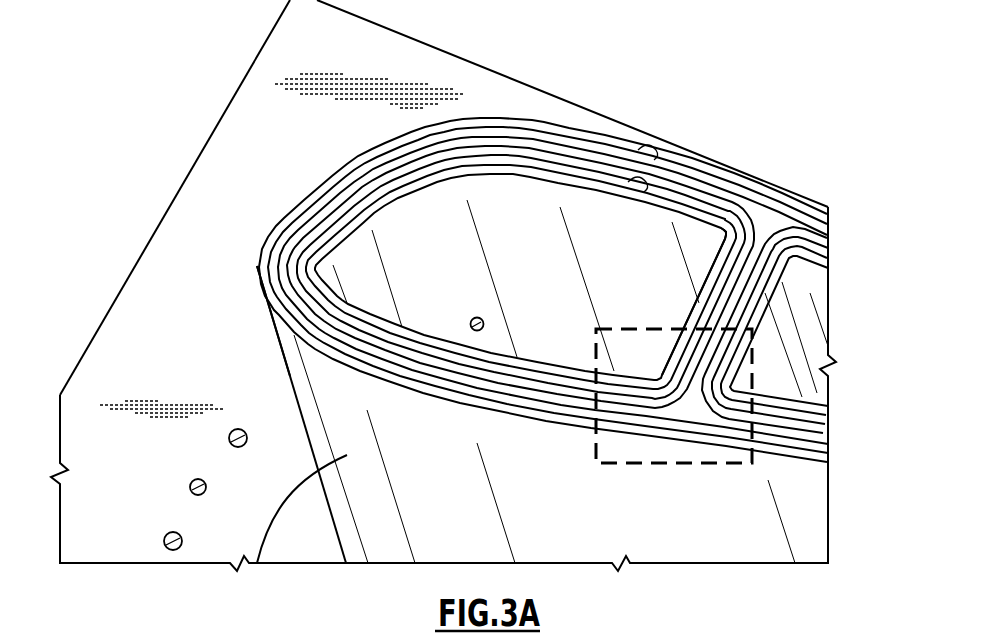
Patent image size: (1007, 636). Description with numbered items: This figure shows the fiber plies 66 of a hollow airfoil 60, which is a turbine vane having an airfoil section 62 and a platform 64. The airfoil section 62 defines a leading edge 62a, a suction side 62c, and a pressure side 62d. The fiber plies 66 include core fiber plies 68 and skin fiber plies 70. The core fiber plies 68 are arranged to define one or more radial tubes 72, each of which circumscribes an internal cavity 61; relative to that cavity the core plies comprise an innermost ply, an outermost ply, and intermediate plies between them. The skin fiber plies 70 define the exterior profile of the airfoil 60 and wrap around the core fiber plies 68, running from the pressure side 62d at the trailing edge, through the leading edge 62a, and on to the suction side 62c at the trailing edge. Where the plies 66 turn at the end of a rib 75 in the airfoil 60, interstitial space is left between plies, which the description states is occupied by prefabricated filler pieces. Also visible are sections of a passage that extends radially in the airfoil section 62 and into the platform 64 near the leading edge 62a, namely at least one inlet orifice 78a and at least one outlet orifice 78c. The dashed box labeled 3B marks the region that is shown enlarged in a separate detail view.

The airfoil 60 is at (108, 242).
The platform 64 is at (245, 143).
The suction side 62c is at (762, 181).
The airfoil section 62 is at (270, 366).
The leading edge 62a is at (256, 268).
The pressure side 62d is at (330, 462).
The radial tube 72 is at (436, 212).
The skin fiber plies 70 is at (668, 149).
The core fiber plies 68 is at (642, 190).
The fiber plies 66 is at (676, 222).
The internal cavity 61 is at (710, 259).
The rib 75 is at (762, 300).
The inlet orifice 78a is at (474, 317).
The outlet orifice 78c is at (229, 438).
The detail view boundary 3B is at (690, 463).